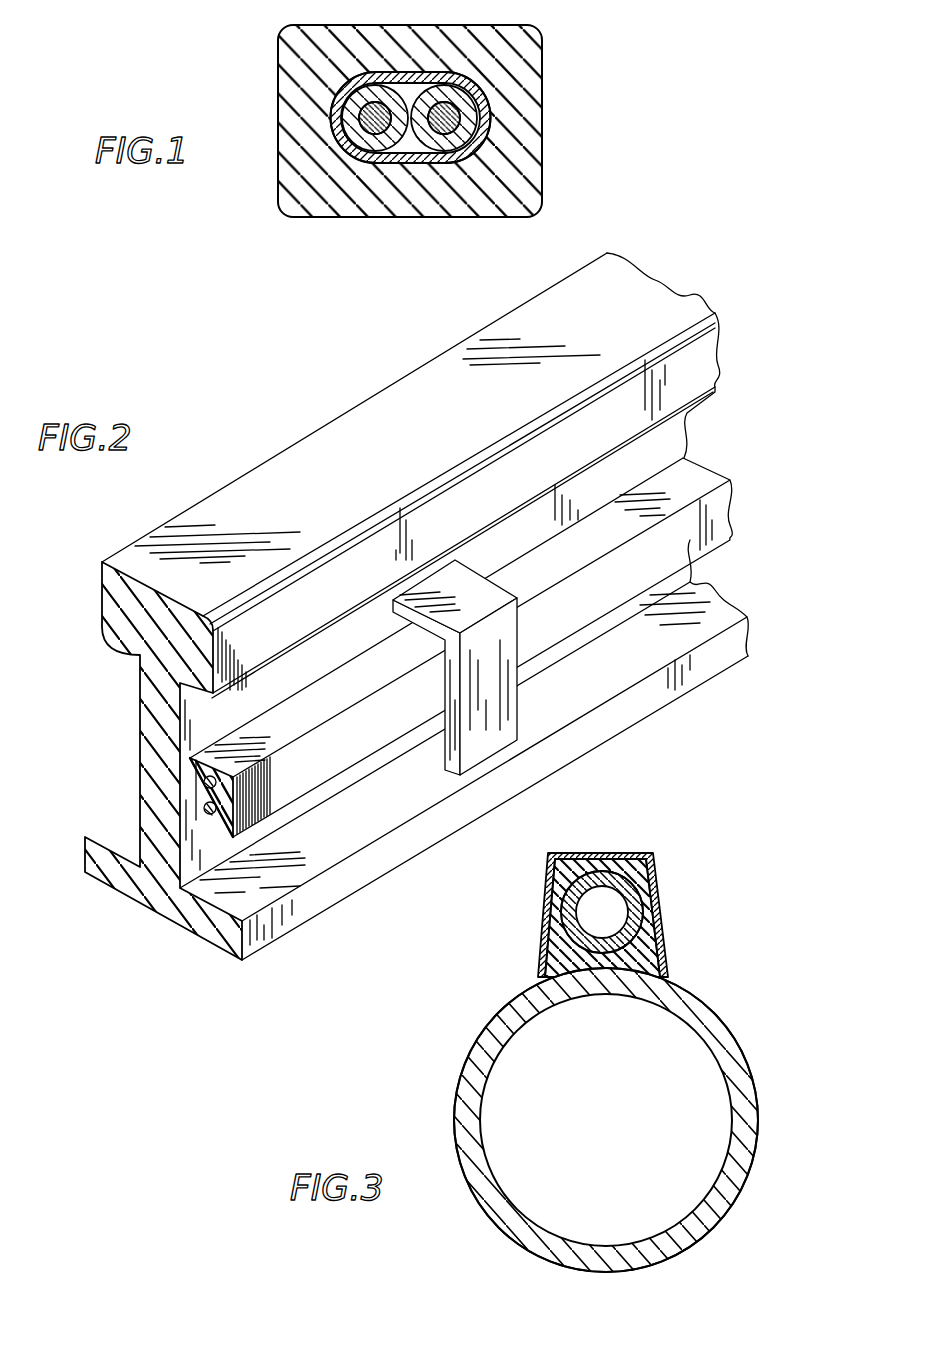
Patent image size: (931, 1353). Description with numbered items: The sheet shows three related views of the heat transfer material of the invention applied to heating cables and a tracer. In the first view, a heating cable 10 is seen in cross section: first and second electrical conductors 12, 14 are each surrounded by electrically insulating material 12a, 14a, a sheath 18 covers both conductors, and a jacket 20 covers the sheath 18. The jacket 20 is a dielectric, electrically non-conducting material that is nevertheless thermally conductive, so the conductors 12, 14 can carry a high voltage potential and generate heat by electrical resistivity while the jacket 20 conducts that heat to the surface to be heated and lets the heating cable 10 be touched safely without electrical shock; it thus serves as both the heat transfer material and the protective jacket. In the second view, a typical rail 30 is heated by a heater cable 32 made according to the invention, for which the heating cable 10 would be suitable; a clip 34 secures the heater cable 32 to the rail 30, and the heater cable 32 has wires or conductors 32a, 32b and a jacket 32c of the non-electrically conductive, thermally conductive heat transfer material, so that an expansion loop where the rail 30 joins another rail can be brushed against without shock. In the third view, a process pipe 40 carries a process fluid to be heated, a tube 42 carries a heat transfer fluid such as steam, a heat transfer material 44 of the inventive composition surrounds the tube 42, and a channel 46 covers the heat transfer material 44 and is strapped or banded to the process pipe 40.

In FIG. 1, the heating cable 10 is at (563, 98).
In FIG. 1, the first electrical conductor 12 is at (375, 130).
In FIG. 1, the electrically insulating material 12a is at (347, 128).
In FIG. 1, the second electrical conductor 14 is at (453, 130).
In FIG. 1, the electrically insulating material 14a is at (500, 141).
In FIG. 1, the sheath 18 is at (333, 101).
In FIG. 1, the jacket 20 is at (510, 43).
In FIG. 2, the rail 30 is at (290, 452).
In FIG. 2, the heater cable 32 is at (718, 523).
In FIG. 2, the conductor 32a is at (197, 778).
In FIG. 2, the conductor 32b is at (203, 808).
In FIG. 2, the jacket 32c is at (205, 868).
In FIG. 2, the clip 34 is at (490, 735).
In FIG. 3, the process pipe 40 is at (455, 1110).
In FIG. 3, the tube 42 is at (613, 885).
In FIG. 3, the heat transfer material 44 is at (643, 945).
In FIG. 3, the channel 46 is at (655, 878).